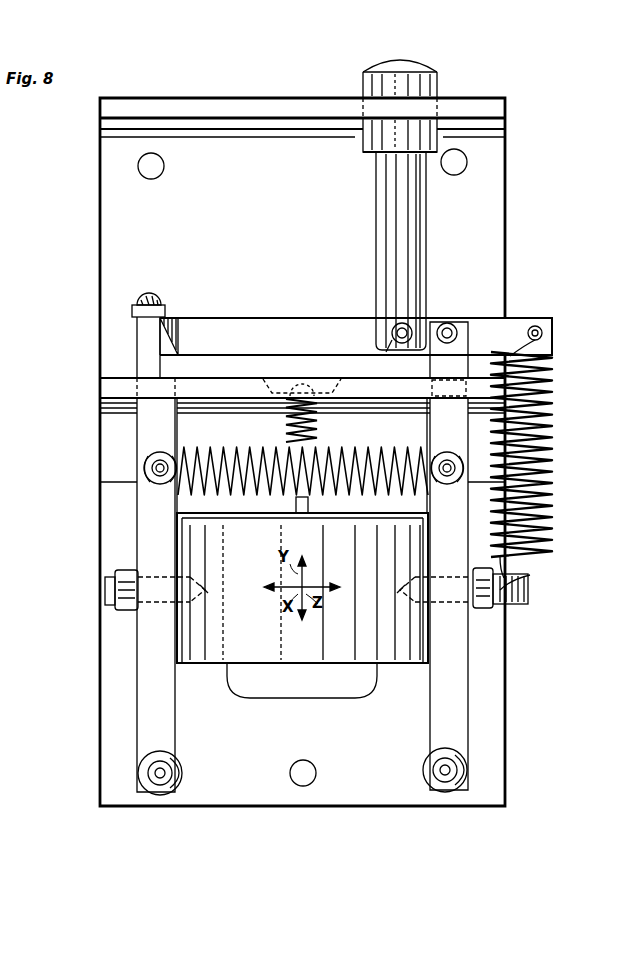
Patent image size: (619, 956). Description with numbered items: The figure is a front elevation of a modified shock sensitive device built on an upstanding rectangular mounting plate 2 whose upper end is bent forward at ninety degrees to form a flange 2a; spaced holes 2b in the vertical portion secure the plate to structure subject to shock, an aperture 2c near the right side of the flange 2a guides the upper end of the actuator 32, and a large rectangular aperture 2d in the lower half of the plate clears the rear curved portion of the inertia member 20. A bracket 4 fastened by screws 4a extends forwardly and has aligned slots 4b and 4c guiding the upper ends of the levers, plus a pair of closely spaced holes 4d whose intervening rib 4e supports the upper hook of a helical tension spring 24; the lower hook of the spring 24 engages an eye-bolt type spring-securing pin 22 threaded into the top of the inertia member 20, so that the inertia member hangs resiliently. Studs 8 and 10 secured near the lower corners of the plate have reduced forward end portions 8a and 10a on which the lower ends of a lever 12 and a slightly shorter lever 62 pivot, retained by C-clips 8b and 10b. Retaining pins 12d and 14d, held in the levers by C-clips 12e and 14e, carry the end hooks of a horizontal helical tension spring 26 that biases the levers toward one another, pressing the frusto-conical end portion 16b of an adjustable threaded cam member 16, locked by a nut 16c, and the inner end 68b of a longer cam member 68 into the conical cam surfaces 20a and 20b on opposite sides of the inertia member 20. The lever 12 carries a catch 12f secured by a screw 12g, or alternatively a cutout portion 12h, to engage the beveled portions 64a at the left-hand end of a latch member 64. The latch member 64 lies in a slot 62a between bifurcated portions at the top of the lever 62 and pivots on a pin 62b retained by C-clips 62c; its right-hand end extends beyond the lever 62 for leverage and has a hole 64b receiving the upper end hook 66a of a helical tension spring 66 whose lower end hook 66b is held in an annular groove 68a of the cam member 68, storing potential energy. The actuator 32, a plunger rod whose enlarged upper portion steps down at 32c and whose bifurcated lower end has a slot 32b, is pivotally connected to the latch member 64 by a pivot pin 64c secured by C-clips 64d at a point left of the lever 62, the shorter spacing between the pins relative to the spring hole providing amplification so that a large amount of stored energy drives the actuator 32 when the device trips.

The mounting plate 2 is at (505, 225).
The flange 2a is at (505, 112).
The holes 2b is at (151, 179).
The aperture 2c is at (360, 108).
The aperture 2d is at (262, 698).
The bracket 4 is at (100, 385).
The screws 4a is at (136, 458).
The slot 4b is at (190, 416).
The slot 4c is at (424, 400).
The holes 4d is at (265, 380).
The rib 4e is at (306, 372).
The stud 8 is at (178, 760).
The reduced forward end portion 8a is at (148, 773).
The C-clip 8b is at (180, 780).
The stud 10 is at (424, 775).
The reduced forward end portion 10a is at (460, 768).
The C-clip 10b is at (433, 762).
The lever 12 is at (162, 720).
The retaining pin 12d is at (158, 484).
The C-clips 12e is at (158, 452).
The catch 12f is at (165, 311).
The screw 12g is at (145, 290).
The cutout portion 12h is at (160, 345).
The retaining pin 14d is at (450, 484).
The C-clips 14e is at (449, 452).
The cam member 16 is at (112, 600).
The frusto-conical end portion 16b is at (206, 590).
The locking nut 16c is at (108, 577).
The inertia member 20 is at (258, 635).
The cam surface 20a is at (186, 602).
The cam surface 20b is at (418, 604).
The spring-securing pin 22 is at (302, 513).
The helical tension spring 24 is at (318, 428).
The helical tension spring 26 is at (245, 445).
The actuator 32 is at (440, 68).
The slot 32b is at (395, 283).
The cylinder bottom flange 32c is at (372, 152).
The lever 62 is at (440, 710).
The slot 62a is at (448, 384).
The pivot pin 62b is at (455, 330).
The C-clips 62c is at (443, 325).
The latch member 64 is at (280, 345).
The beveled portions 64a is at (172, 340).
The hole 64b is at (535, 326).
The pivot pin 64c is at (398, 340).
The C-clips 64d is at (395, 325).
The helical tension spring 66 is at (552, 437).
The upper end hook 66a is at (552, 350).
The lower end hook 66b is at (510, 604).
The cam member 68 is at (528, 590).
The annular groove 68a is at (530, 575).
The right bolt tip 68b is at (400, 590).